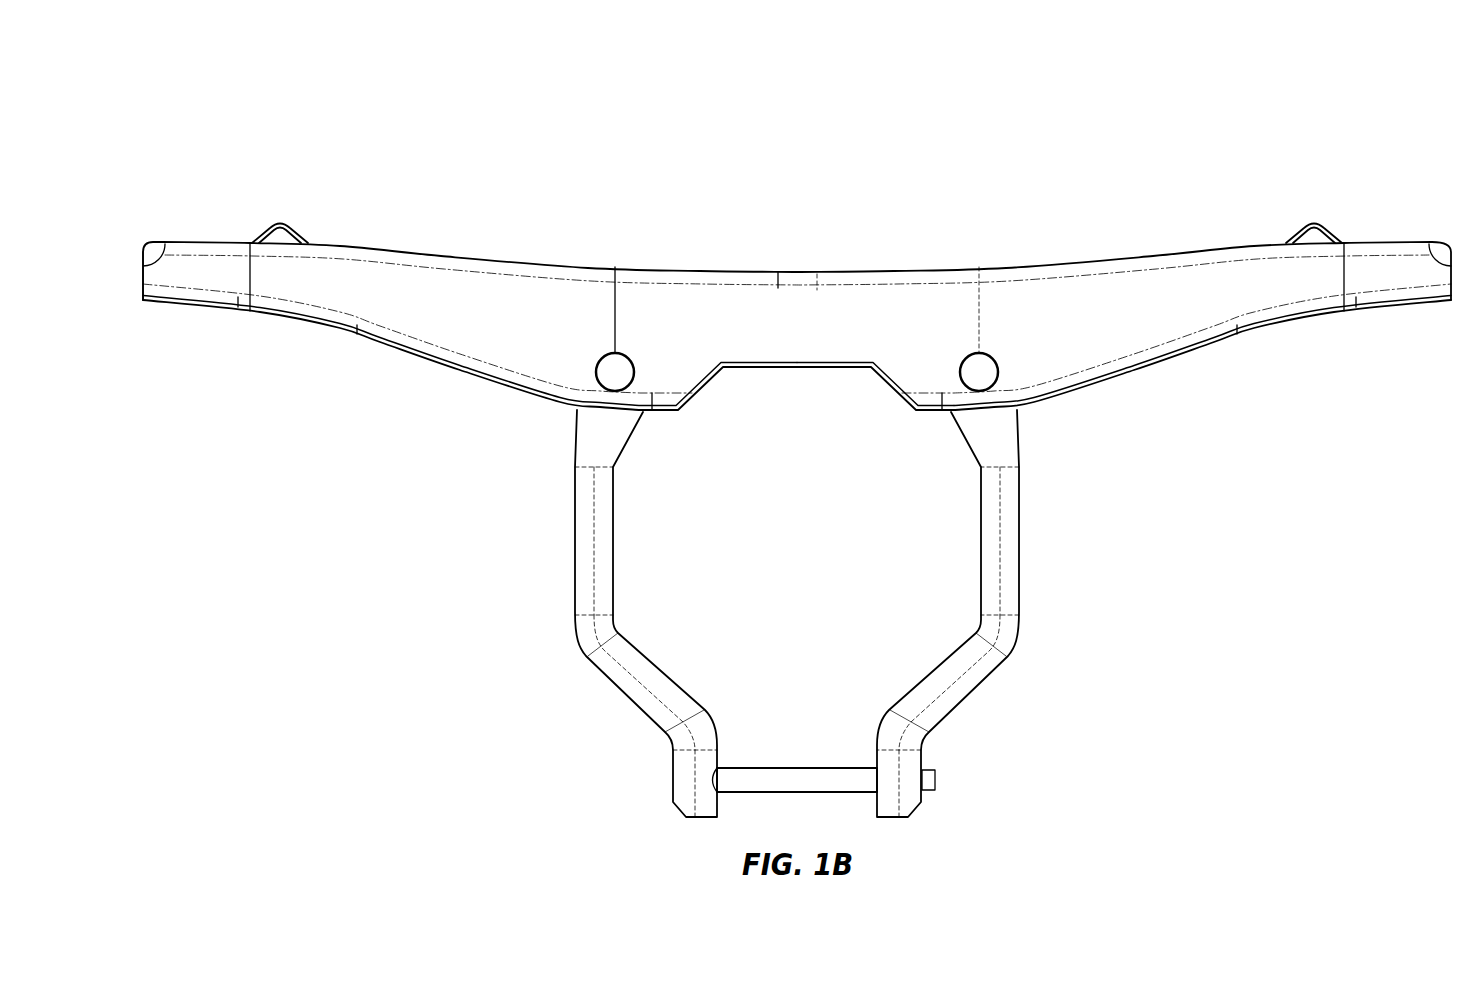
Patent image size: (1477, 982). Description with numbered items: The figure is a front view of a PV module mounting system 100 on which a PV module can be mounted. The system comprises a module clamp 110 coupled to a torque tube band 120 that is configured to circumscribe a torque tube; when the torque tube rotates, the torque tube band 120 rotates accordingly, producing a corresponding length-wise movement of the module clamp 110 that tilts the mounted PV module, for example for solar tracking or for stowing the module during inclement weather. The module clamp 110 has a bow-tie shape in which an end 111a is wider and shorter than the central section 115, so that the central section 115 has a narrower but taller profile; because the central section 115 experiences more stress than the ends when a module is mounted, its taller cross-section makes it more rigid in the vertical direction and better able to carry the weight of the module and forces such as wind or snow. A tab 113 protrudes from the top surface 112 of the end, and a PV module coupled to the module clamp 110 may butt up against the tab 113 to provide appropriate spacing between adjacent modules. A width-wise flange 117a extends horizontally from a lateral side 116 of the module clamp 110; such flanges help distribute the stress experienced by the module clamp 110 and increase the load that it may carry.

The PV module mounting system 100 is at (767, 435).
The module clamp 110 is at (766, 289).
The end 111a is at (145, 276).
The top surface 112 is at (1181, 248).
The tab 113 is at (1313, 226).
The central section 115 is at (837, 280).
The lateral side 116 is at (338, 292).
The width-wise flange 117a is at (442, 360).
The torque tube band 120 is at (577, 595).